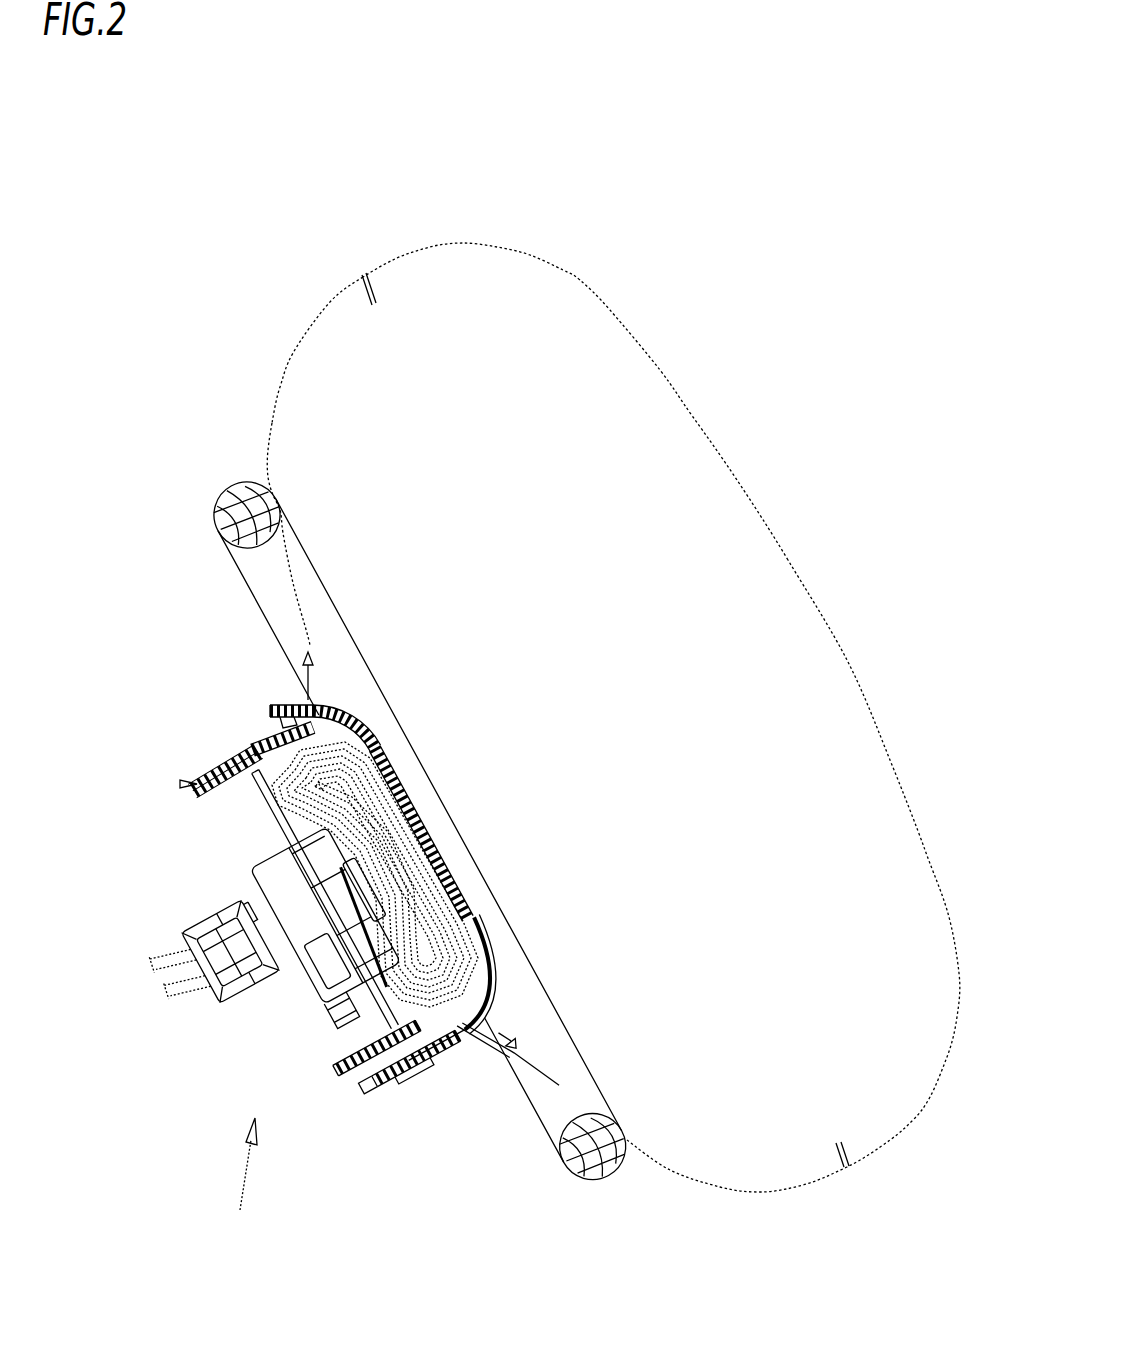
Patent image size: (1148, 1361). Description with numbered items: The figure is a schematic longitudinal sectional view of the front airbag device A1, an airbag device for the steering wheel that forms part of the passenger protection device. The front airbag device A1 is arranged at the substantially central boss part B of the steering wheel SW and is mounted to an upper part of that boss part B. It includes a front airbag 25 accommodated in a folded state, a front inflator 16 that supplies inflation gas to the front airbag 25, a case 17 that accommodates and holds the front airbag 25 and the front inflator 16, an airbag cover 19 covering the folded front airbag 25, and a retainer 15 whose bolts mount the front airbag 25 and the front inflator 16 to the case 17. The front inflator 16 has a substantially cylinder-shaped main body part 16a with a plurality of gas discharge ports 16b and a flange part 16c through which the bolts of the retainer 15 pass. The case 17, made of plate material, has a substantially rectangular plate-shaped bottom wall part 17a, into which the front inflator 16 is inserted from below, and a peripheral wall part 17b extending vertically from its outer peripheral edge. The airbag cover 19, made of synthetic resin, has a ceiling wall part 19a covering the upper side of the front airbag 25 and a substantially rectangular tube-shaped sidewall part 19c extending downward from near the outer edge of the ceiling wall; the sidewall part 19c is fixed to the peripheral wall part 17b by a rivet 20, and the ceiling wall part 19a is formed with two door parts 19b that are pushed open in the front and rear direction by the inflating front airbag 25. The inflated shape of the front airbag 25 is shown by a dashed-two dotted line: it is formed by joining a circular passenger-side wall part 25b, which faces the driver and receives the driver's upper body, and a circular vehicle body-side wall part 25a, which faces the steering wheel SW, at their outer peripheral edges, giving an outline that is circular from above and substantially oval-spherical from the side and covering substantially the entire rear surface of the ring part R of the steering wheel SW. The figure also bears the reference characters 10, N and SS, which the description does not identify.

The front airbag 25 is at (599, 675).
The vehicle body-side wall part 25a is at (292, 352).
The passenger-side wall part 25b is at (682, 395).
The ring part R is at (245, 478).
The steering wheel SW is at (508, 1183).
The airbag cover 19 is at (444, 815).
The ceiling wall part 19a is at (478, 1002).
The door parts 19b is at (365, 737).
The sidewall part 19c is at (255, 735).
The rivet 20 is at (212, 748).
The boss part B is at (178, 783).
The front inflator 16 is at (275, 944).
The main body part 16a is at (350, 1007).
The gas discharge ports 16b is at (318, 958).
The flange part 16c is at (265, 882).
The connector 10 is at (201, 1039).
The wire N is at (190, 990).
The wire SS is at (240, 1005).
The retainer 15 is at (352, 1040).
The case 17 is at (422, 1122).
The bottom wall part 17a is at (390, 1078).
The peripheral wall part 17b is at (440, 1050).
The front airbag device A1 is at (237, 1185).